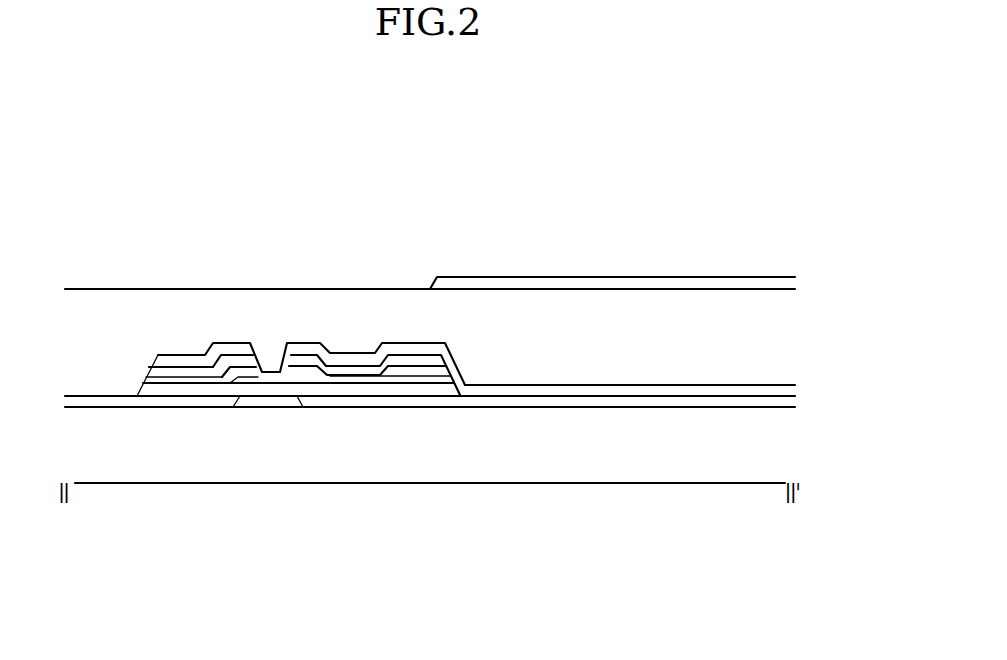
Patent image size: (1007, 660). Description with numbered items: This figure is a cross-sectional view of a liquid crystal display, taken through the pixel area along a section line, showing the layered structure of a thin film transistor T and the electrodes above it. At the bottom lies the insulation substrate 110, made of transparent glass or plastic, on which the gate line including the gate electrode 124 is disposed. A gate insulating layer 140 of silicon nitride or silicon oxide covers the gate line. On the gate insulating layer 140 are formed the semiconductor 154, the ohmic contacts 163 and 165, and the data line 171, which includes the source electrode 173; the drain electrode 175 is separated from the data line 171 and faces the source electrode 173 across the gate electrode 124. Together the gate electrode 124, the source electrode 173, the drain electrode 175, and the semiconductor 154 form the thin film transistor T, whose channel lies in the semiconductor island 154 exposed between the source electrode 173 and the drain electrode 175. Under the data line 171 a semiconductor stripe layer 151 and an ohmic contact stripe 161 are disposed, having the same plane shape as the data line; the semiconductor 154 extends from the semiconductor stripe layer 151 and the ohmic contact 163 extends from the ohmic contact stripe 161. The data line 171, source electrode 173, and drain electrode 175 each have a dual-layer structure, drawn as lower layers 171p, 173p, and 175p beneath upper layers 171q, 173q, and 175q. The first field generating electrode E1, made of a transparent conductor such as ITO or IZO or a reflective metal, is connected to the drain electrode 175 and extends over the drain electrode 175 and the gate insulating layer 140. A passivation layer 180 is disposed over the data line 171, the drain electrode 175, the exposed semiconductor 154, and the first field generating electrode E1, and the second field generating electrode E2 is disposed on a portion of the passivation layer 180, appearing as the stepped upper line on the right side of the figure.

The insulation substrate 110 is at (668, 460).
The gate electrode 124 is at (268, 400).
The gate insulating layer 140 is at (545, 400).
The semiconductor stripe layer 151 is at (150, 392).
The semiconductor 154 is at (300, 383).
The ohmic contact stripe 161 is at (152, 352).
The ohmic contact 163 is at (243, 378).
The ohmic contact 165 is at (434, 388).
The data line 171 is at (184, 280).
The lower layer of data line 171p is at (182, 362).
The upper layer of data line 171q is at (172, 372).
The source electrode 173 is at (183, 467).
The lower layer of source electrode 173p is at (158, 388).
The upper layer of source electrode 173q is at (202, 373).
The drain electrode 175 is at (372, 461).
The lower layer of drain electrode 175p is at (367, 454).
The upper layer of drain electrode 175q is at (355, 358).
The passivation layer 180 is at (610, 350).
The first field generating electrode E1 is at (737, 390).
The second field generating electrode E2 is at (605, 277).
The thin film transistor T is at (273, 406).